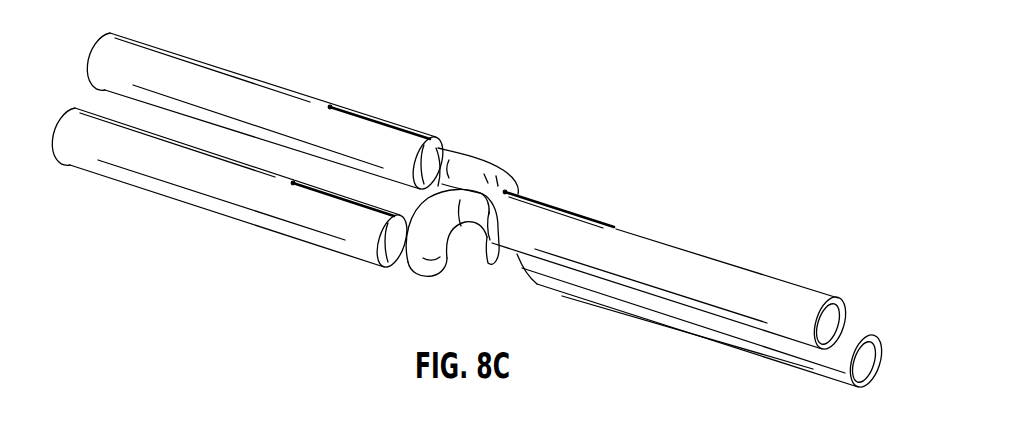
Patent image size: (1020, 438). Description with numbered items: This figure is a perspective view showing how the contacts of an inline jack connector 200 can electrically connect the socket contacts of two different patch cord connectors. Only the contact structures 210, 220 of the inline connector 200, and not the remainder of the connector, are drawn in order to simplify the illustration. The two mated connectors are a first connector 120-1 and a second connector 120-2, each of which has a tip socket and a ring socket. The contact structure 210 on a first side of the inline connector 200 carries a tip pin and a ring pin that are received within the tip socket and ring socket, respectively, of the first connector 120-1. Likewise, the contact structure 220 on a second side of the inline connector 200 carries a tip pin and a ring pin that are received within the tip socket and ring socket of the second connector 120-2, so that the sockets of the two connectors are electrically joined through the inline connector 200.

The inline jack connector 200 is at (469, 221).
The first connector 120-1 is at (688, 298).
The second connector 120-2 is at (250, 140).
The contact structure 210 is at (456, 268).
The contact structure 220 is at (510, 170).